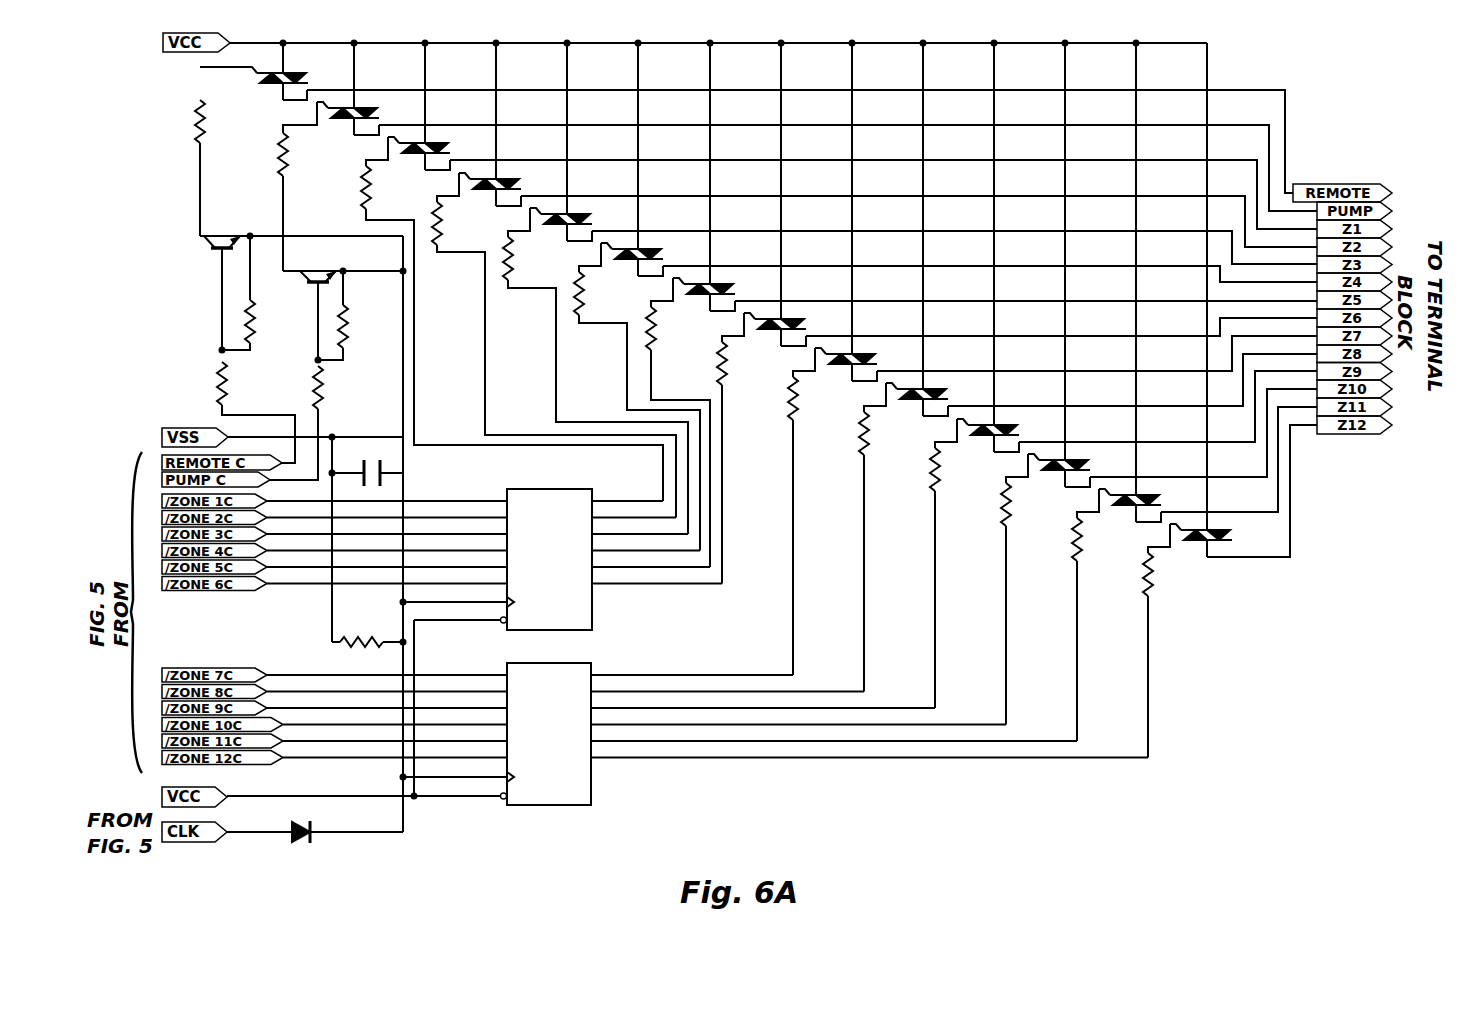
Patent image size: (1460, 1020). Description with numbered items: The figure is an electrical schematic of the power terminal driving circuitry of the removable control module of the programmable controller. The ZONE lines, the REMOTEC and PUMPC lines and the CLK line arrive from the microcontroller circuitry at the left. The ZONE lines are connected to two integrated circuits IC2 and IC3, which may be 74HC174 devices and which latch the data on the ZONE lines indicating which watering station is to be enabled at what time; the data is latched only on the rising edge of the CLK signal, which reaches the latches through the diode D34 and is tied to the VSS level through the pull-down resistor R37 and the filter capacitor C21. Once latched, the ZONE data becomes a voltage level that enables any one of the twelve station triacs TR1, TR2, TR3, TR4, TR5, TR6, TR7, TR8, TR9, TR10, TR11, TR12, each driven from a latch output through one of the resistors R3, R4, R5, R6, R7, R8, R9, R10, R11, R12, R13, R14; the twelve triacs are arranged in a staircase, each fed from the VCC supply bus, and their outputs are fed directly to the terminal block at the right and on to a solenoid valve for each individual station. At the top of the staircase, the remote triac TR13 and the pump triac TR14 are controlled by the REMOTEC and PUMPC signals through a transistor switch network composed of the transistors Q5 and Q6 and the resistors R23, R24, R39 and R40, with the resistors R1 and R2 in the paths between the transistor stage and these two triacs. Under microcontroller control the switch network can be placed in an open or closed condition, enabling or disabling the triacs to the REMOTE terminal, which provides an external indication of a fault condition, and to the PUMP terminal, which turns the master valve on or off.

The station triac TR1 is at (426, 151).
The station triac TR2 is at (497, 187).
The station triac TR3 is at (568, 222).
The station triac TR4 is at (639, 257).
The station triac TR5 is at (711, 292).
The station triac TR6 is at (782, 327).
The station triac TR7 is at (853, 362).
The station triac TR8 is at (924, 397).
The station triac TR9 is at (995, 433).
The station triac TR10 is at (1071, 468).
The station triac TR11 is at (1142, 503).
The station triac TR12 is at (1213, 538).
The remote triac TR13 is at (269, 76).
The pump triac TR14 is at (354, 114).
The resistor R1 is at (217, 121).
The resistor R2 is at (299, 154).
The resistor R3 is at (382, 187).
The resistor R4 is at (453, 223).
The resistor R5 is at (524, 258).
The resistor R6 is at (595, 293).
The resistor R7 is at (668, 328).
The resistor R8 is at (738, 363).
The resistor R9 is at (809, 398).
The resistor R10 is at (887, 433).
The resistor R11 is at (958, 469).
The resistor R12 is at (1029, 504).
The resistor R13 is at (1100, 539).
The resistor R14 is at (1171, 574).
The resistor R23 is at (248, 384).
The resistor R24 is at (342, 387).
The pull-down resistor R37 is at (361, 631).
The resistor R39 is at (273, 321).
The resistor R40 is at (366, 326).
The transistor Q5 is at (222, 231).
The transistor Q6 is at (318, 266).
The filter capacitor C21 is at (374, 463).
The diode D34 is at (302, 823).
The integrated circuit IC2 is at (550, 560).
The integrated circuit IC3 is at (550, 737).